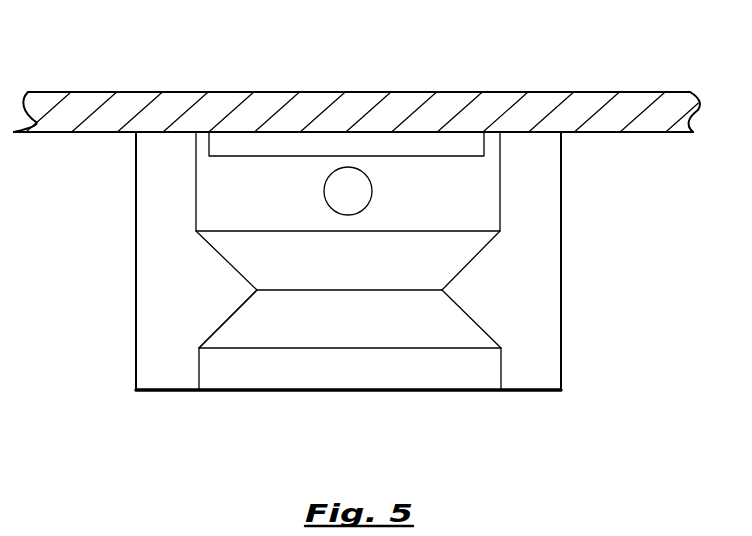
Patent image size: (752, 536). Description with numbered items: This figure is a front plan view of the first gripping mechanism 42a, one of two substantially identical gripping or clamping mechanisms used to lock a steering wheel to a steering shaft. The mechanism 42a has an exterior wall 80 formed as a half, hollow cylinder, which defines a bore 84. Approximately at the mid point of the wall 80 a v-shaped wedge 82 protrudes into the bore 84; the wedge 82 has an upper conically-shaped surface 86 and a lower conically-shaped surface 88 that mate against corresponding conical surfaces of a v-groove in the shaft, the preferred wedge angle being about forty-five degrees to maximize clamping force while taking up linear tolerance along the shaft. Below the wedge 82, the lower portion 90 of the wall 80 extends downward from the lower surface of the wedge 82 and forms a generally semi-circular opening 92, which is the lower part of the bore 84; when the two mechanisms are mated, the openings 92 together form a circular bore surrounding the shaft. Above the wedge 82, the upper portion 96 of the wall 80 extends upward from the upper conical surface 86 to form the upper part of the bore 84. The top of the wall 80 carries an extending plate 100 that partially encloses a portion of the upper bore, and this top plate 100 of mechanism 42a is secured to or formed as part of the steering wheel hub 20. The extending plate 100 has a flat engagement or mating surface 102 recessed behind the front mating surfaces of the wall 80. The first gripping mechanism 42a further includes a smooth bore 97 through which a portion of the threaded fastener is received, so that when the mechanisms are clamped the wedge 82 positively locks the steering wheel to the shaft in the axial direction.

The steering wheel hub 20 is at (228, 92).
The exterior wall 80 is at (158, 342).
The first gripping mechanism 42a is at (568, 345).
The lower portion 90 is at (547, 373).
The flat engagement surface 102 is at (415, 198).
The extending plate 100 is at (416, 146).
The upper portion 96 is at (522, 185).
The upper conically-shaped surface 86 is at (230, 267).
The v-shaped wedge 82 is at (250, 288).
The bore 84 is at (418, 335).
The lower conically-shaped surface 88 is at (230, 322).
The semi-circular opening 92 is at (501, 370).
The smooth bore 97 is at (371, 180).